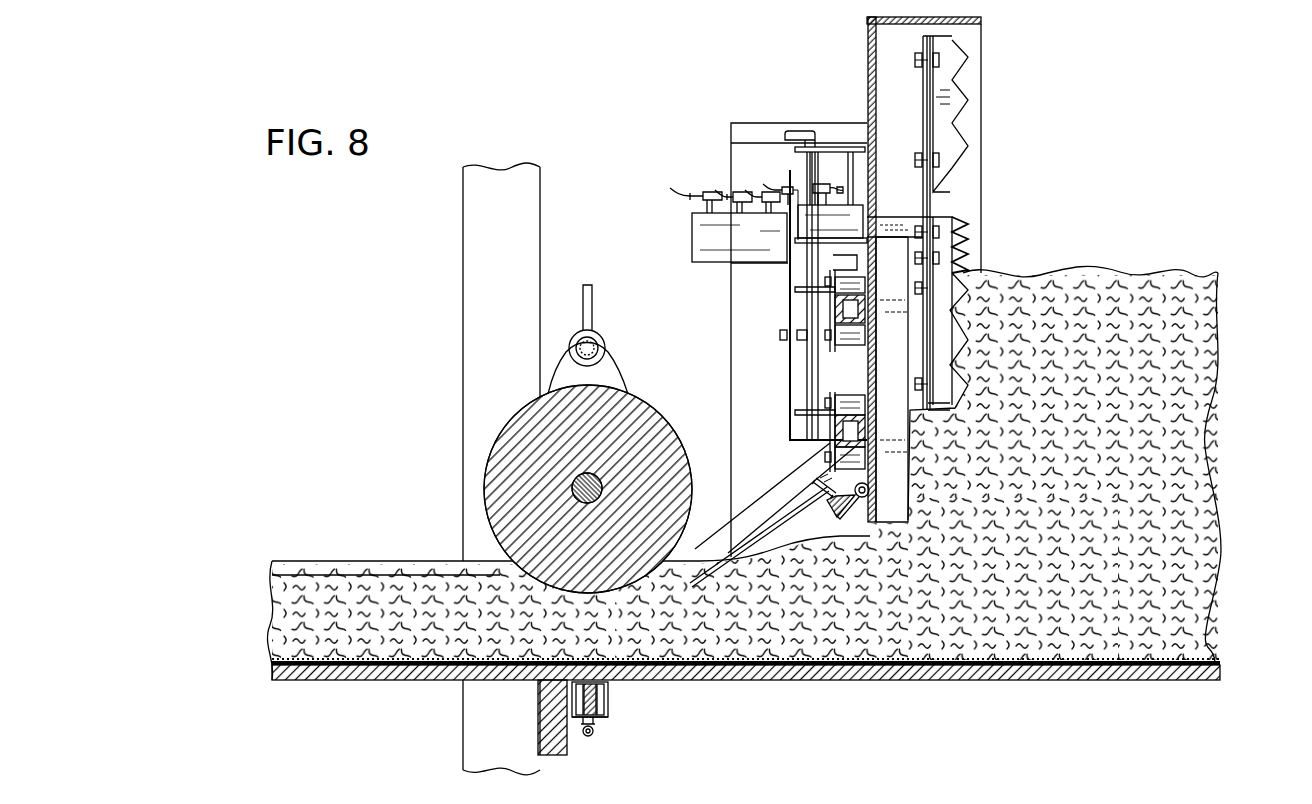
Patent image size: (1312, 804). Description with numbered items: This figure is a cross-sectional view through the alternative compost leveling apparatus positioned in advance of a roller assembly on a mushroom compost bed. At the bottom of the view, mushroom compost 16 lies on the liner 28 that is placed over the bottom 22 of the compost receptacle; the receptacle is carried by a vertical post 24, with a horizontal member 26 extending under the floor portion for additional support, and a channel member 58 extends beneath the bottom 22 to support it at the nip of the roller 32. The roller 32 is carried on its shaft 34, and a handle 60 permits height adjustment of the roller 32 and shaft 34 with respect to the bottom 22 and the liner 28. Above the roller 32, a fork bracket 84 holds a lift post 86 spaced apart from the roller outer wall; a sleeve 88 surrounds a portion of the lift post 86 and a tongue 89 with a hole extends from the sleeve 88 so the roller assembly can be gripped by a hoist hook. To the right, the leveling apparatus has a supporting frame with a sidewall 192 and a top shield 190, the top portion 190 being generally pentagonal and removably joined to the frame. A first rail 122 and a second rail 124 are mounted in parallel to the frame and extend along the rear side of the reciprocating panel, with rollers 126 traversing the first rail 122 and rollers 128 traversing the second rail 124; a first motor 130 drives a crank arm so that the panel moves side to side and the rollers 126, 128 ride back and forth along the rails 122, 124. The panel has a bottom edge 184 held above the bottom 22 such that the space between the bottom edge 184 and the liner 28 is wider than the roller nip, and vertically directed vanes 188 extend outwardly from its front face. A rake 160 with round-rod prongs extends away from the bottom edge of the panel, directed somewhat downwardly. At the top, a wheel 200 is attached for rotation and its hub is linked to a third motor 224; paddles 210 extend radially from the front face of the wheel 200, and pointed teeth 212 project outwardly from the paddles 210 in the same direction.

The mushroom compost 16 is at (1162, 273).
The bottom 22 is at (1172, 682).
The vertical post 24 is at (474, 238).
The horizontal member 26 is at (553, 757).
The liner 28 is at (1215, 663).
The roller 32 is at (505, 438).
The shaft 34 is at (572, 491).
The channel member 58 is at (608, 705).
The handle 60 is at (595, 735).
The fork bracket 84 is at (605, 373).
The lift post 86 is at (604, 348).
The sleeve 88 is at (592, 325).
The tongue 89 is at (582, 298).
The first rail 122 is at (838, 310).
The second rail 124 is at (835, 430).
The rollers 126 is at (838, 282).
The rollers 128 is at (842, 397).
The first motor 130 is at (703, 240).
The rake 160 is at (778, 530).
The bottom edge 184 is at (873, 523).
The vanes 188 is at (897, 510).
The top shield 190 is at (870, 16).
The sidewall 192 is at (757, 122).
The wheel 200 is at (955, 42).
The paddles 210 is at (945, 62).
The teeth 212 is at (968, 101).
The third motor 224 is at (823, 222).